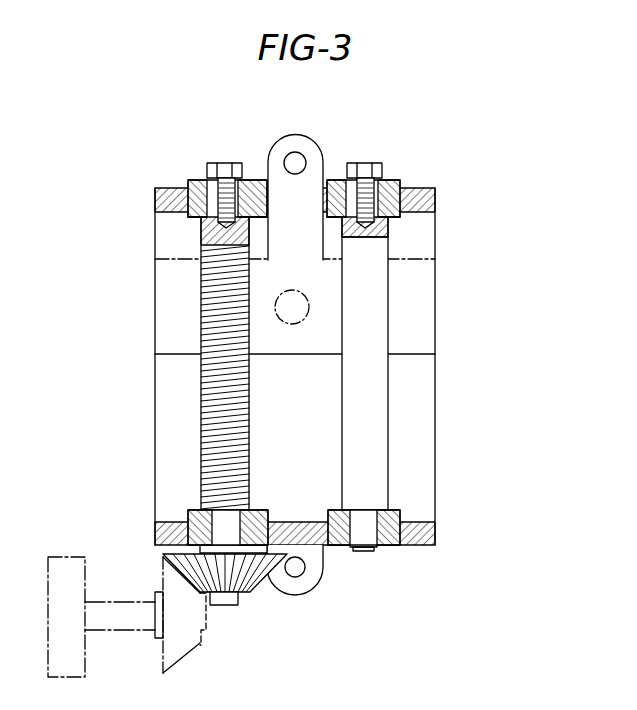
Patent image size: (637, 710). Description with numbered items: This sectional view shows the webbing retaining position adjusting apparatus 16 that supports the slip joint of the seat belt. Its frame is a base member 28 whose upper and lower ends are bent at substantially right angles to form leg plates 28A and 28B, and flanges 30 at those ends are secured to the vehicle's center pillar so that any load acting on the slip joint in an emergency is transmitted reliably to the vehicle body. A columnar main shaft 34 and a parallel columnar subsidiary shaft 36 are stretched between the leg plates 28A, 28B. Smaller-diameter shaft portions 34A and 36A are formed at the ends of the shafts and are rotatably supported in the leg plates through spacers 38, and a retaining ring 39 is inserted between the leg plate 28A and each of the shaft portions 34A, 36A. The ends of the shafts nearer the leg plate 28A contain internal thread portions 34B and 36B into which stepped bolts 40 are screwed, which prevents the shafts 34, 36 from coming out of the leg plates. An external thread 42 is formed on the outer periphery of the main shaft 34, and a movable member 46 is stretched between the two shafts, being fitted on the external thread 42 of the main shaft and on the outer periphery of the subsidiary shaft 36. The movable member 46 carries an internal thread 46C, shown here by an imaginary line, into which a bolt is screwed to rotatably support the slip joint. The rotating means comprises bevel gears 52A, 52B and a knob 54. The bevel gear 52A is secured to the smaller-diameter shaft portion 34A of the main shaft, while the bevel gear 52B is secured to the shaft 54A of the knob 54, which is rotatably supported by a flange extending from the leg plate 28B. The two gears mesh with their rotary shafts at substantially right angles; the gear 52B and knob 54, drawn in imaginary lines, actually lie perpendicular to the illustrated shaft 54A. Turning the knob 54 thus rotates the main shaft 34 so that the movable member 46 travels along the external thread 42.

The webbing retaining position adjusting apparatus 16 is at (482, 151).
The base member 28 is at (329, 358).
The leg plate 28A is at (437, 197).
The leg plate 28B is at (437, 528).
The flange 30 is at (302, 150).
The main shaft 34 is at (207, 367).
The smaller-diameter shaft portion 34A is at (210, 217).
The internal thread portion 34B is at (207, 219).
The subsidiary shaft 36 is at (392, 381).
The smaller-diameter shaft portion 36A is at (392, 214).
The internal thread portion 36B is at (347, 217).
The spacer 38 is at (319, 341).
The retaining ring 39 is at (262, 219).
The stepped bolt 40 is at (228, 163).
The external thread 42 is at (249, 415).
The movable member 46 is at (324, 306).
The internal thread 46C is at (307, 304).
The bevel gear 52A is at (257, 586).
The bevel gear 52B is at (198, 647).
The knob 54 is at (105, 633).
The shaft 54A is at (117, 631).